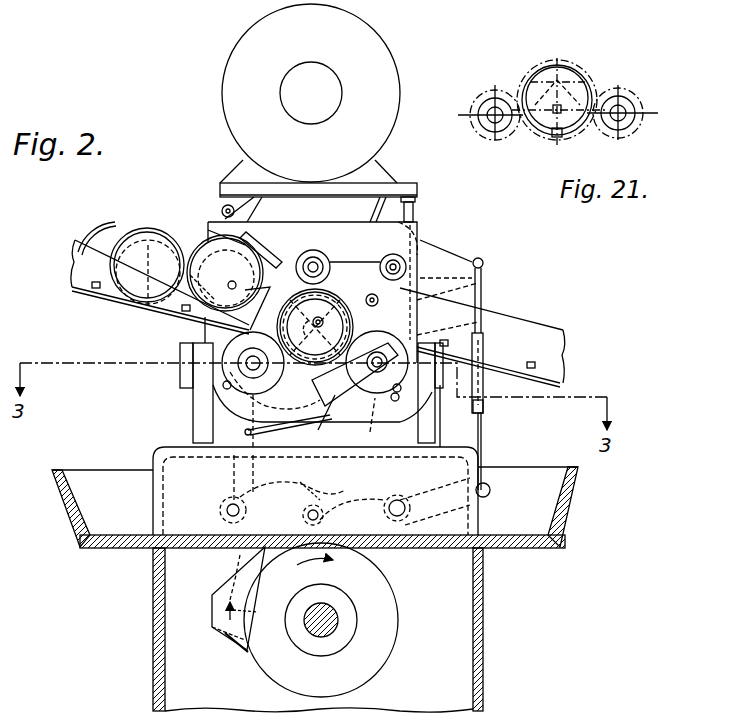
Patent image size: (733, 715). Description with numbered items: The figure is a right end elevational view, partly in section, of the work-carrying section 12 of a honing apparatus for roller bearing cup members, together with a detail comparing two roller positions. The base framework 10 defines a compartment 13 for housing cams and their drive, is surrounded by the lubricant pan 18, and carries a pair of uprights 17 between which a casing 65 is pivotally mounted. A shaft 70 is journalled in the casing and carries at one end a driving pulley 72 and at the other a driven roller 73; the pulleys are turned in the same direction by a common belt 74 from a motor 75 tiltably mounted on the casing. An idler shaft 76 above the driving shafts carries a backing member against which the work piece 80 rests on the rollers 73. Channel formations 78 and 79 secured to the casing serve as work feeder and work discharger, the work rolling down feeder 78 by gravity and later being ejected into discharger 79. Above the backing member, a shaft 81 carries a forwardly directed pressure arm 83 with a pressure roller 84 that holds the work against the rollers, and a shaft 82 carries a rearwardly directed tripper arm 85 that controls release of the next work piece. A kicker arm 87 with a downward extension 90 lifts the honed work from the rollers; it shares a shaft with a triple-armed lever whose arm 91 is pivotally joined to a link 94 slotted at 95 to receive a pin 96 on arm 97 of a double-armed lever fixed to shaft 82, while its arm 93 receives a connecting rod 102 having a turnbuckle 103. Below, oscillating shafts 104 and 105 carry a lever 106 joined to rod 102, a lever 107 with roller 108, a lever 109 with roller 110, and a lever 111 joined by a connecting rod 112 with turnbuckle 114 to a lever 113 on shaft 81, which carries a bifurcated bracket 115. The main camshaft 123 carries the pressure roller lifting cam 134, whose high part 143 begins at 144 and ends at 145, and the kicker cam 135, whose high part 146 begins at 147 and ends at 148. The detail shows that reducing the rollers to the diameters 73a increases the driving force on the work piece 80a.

In FIG. 2, the base framework 10 is at (485, 600).
In FIG. 2, the work-carrying section 12 is at (210, 220).
In FIG. 2, the compartment 13 is at (483, 648).
In FIG. 2, the uprights 17 is at (197, 430).
In FIG. 2, the lubricant pan 18 is at (572, 500).
In FIG. 2, the casing 65 is at (422, 235).
In FIG. 2, the shaft 70 is at (252, 365).
In FIG. 2, the driving pulley 72 is at (240, 452).
In FIG. 2, the driven roller 73 is at (226, 392).
In FIG. 21, the driven roller 73 is at (480, 95).
In FIG. 21, the reduced-diameter rollers 73a is at (498, 90).
In FIG. 2, the common belt 74 is at (322, 420).
In FIG. 2, the motor 75 is at (388, 88).
In FIG. 2, the idler shaft 76 is at (313, 334).
In FIG. 2, the channel formation (work feeder) 78 is at (75, 264).
In FIG. 2, the channel formation (work discharger) 79 is at (558, 355).
In FIG. 2, the work piece 80 is at (303, 297).
In FIG. 21, the work piece 80 is at (570, 40).
In FIG. 21, the work piece 80a is at (580, 68).
In FIG. 2, the shaft 81 is at (390, 255).
In FIG. 2, the shaft 82 is at (248, 232).
In FIG. 2, the pressure arm 83 is at (354, 260).
In FIG. 2, the pressure roller 84 is at (318, 252).
In FIG. 2, the tripper arm 85 is at (262, 244).
In FIG. 2, the kicker arm 87 is at (372, 395).
In FIG. 2, the downward extension of kicker arm section 90 is at (306, 421).
In FIG. 2, the arm of triple-armed lever 91 is at (375, 318).
In FIG. 2, the arm of triple-armed lever 93 is at (451, 416).
In FIG. 2, the link 94 is at (257, 308).
In FIG. 2, the slot 95 is at (225, 292).
In FIG. 2, the pin 96 is at (242, 273).
In FIG. 2, the arm of double-armed lever 97 is at (215, 232).
In FIG. 2, the connecting rod 102 is at (380, 420).
In FIG. 2, the turnbuckle 103 is at (352, 492).
In FIG. 2, the shaft 104 is at (222, 513).
In FIG. 2, the shaft 105 is at (408, 515).
In FIG. 2, the lever 106 is at (292, 480).
In FIG. 2, the lever 107 is at (245, 520).
In FIG. 2, the roller 108 is at (307, 486).
In FIG. 2, the lever 109 is at (390, 480).
In FIG. 2, the roller 110 is at (325, 520).
In FIG. 2, the lever 111 is at (426, 495).
In FIG. 2, the connecting rod 112 is at (486, 452).
In FIG. 2, the lever 113 is at (478, 257).
In FIG. 2, the turnbuckle 114 is at (483, 385).
In FIG. 2, the bifurcated bracket 115 is at (387, 301).
In FIG. 2, the main camshaft 123 is at (330, 618).
In FIG. 2, the pressure roller lifting cam 134 is at (398, 612).
In FIG. 2, the cam 135 is at (235, 580).
In FIG. 2, the high part 143 is at (212, 607).
In FIG. 2, the beginning point 144 is at (245, 560).
In FIG. 2, the end point 145 is at (243, 655).
In FIG. 2, the high part 146 is at (212, 638).
In FIG. 2, the beginning point 147 is at (255, 611).
In FIG. 2, the end point 148 is at (240, 650).